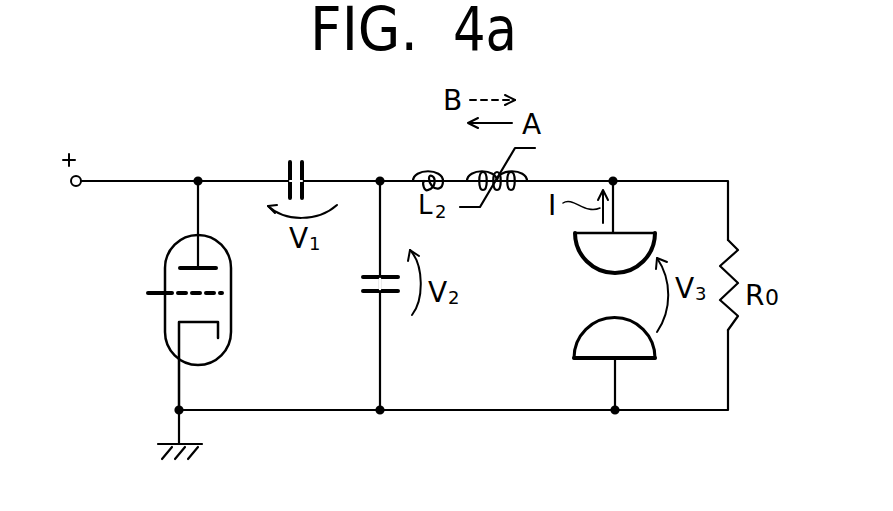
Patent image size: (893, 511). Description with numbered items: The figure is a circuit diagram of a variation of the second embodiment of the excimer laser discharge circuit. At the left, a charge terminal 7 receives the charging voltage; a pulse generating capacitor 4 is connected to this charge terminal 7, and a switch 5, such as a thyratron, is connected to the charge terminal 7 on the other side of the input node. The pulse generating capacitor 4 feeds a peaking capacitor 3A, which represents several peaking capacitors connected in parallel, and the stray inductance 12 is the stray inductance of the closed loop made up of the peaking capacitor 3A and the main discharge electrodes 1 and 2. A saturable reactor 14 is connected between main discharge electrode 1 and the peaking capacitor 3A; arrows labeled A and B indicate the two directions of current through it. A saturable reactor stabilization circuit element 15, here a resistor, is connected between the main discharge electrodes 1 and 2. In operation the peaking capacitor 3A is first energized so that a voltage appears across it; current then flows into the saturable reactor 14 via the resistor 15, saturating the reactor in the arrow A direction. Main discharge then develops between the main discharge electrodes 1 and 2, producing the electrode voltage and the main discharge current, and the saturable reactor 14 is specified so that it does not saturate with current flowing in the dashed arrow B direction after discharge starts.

The charge terminal 7 is at (76, 187).
The switch 5 is at (158, 325).
The pulse generating capacitor 4 is at (296, 158).
The stray inductance L2 12 is at (417, 170).
The saturable reactor 14 is at (528, 171).
The main discharge electrode 1 is at (656, 233).
The main discharge electrode 2 is at (656, 352).
The peaking capacitor 3A is at (395, 293).
The saturable reactor stabilization circuit element 15 is at (742, 250).